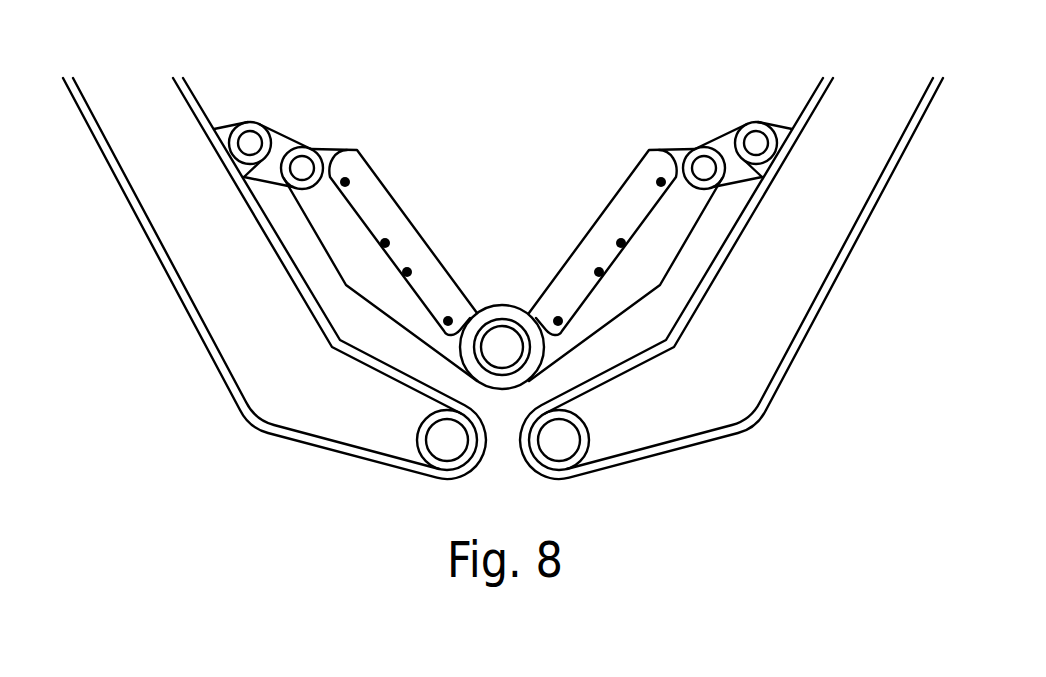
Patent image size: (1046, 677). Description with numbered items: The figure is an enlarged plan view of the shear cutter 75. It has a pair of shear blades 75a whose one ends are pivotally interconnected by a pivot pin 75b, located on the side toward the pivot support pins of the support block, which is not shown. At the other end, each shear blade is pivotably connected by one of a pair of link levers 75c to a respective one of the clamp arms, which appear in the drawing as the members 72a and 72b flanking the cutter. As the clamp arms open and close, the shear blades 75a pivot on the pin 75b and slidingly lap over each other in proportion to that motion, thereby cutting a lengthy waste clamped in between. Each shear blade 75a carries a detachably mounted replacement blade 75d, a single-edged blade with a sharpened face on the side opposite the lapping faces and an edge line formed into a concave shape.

The left frame rail / guide track 72a is at (252, 318).
The right frame rail / guide track 72b is at (773, 272).
The shear cutter 75 is at (507, 278).
The shear blades 75a is at (380, 293).
The pivot pin 75b is at (500, 352).
The link levers 75c is at (284, 142).
The replacement blades 75d is at (377, 207).